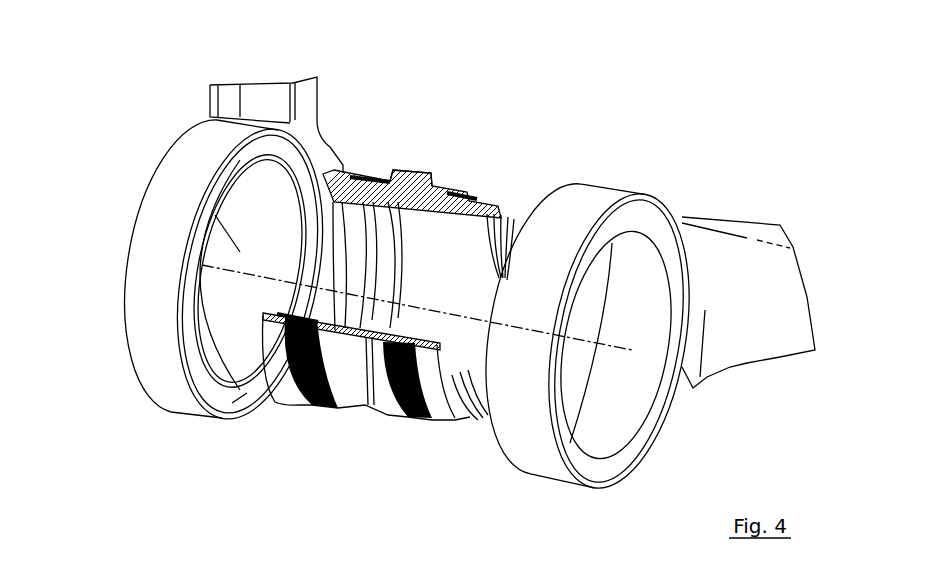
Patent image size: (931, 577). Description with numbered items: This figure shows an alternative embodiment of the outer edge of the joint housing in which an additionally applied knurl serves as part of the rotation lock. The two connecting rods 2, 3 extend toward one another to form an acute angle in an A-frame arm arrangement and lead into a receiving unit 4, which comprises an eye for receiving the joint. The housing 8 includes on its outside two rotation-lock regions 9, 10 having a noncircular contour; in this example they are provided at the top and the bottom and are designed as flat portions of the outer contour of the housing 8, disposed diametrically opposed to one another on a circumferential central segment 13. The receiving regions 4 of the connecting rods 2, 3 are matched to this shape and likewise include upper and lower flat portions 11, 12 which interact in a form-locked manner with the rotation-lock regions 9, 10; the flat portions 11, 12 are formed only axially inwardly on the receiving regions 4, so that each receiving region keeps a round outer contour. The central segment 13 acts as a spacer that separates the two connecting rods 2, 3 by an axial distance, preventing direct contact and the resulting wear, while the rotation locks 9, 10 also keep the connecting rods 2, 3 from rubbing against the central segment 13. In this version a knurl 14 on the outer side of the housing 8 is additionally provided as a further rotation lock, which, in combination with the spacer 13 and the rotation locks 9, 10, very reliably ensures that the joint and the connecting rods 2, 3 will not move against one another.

The connecting rod 2 is at (258, 97).
The connecting rod 3 is at (717, 256).
The receiving unit 4 is at (128, 186).
The housing 8 is at (286, 410).
The rotation-lock region 9 is at (418, 174).
The rotation-lock region 10 is at (411, 433).
The upper flat portion 11 is at (278, 157).
The lower flat portion 12 is at (248, 395).
The central segment 13 is at (360, 406).
The knurl 14 is at (473, 184).